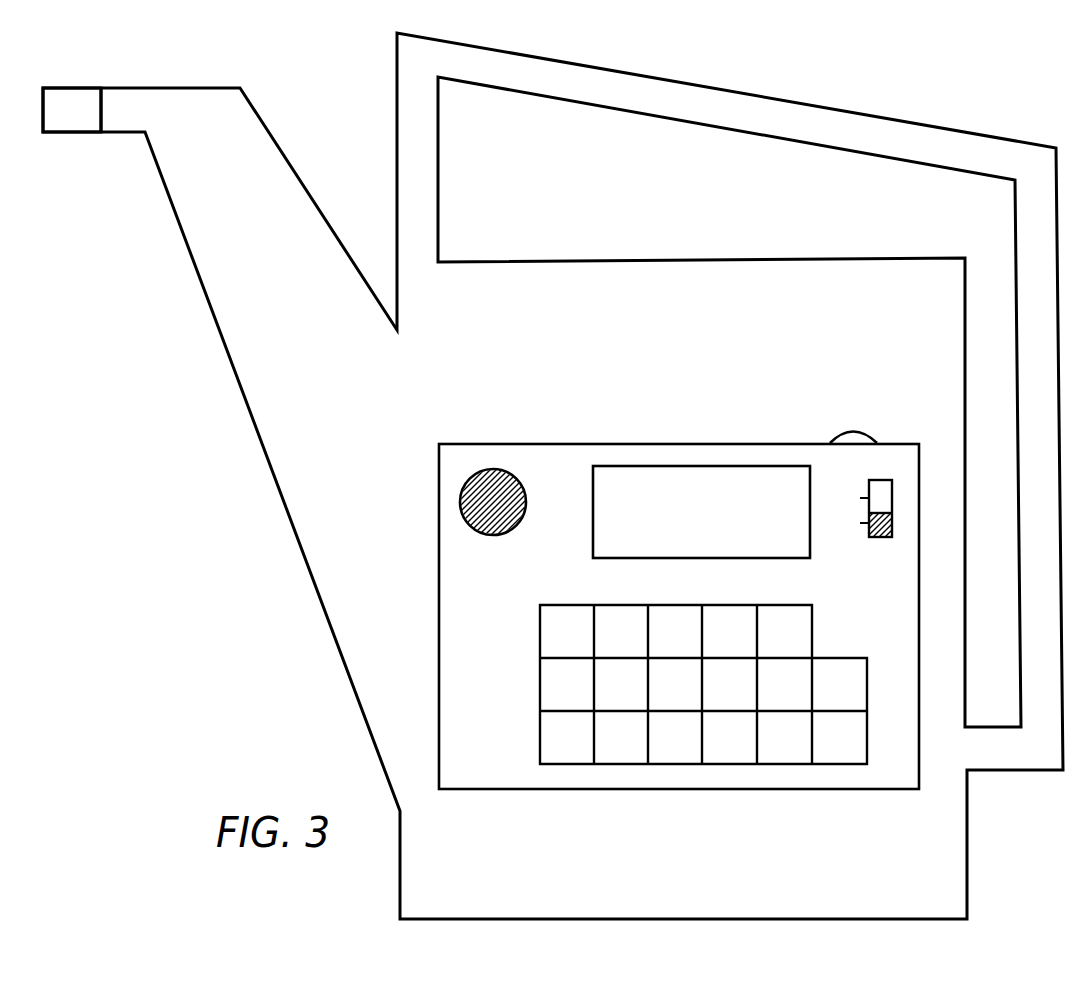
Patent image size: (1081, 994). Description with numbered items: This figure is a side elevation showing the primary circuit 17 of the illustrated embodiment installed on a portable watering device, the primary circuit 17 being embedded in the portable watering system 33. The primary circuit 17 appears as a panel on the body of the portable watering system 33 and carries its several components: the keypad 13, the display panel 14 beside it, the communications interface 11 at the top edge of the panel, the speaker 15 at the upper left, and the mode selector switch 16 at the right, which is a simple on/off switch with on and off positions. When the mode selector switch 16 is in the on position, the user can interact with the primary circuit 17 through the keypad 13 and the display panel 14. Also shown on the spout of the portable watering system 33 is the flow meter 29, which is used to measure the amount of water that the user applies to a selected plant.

The communications interface 11 is at (853, 432).
The keypad 13 is at (540, 637).
The display panel 14 is at (593, 510).
The speaker 15 is at (493, 535).
The mode selector switch 16 is at (880, 537).
The primary circuit 17 is at (919, 637).
The flow meter 29 is at (101, 88).
The portable watering system 33 is at (292, 522).